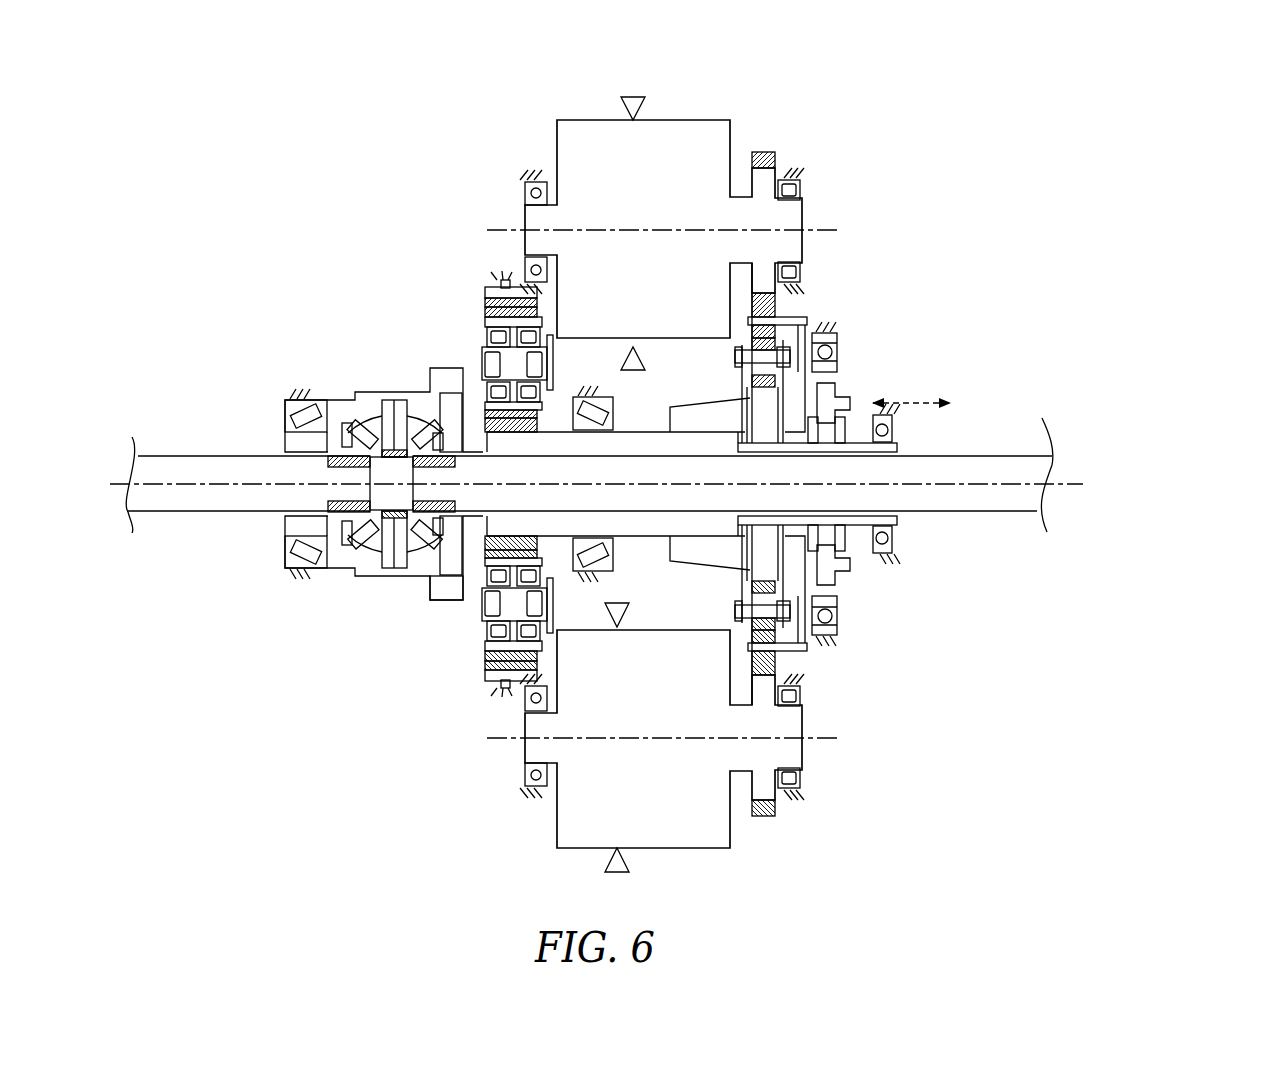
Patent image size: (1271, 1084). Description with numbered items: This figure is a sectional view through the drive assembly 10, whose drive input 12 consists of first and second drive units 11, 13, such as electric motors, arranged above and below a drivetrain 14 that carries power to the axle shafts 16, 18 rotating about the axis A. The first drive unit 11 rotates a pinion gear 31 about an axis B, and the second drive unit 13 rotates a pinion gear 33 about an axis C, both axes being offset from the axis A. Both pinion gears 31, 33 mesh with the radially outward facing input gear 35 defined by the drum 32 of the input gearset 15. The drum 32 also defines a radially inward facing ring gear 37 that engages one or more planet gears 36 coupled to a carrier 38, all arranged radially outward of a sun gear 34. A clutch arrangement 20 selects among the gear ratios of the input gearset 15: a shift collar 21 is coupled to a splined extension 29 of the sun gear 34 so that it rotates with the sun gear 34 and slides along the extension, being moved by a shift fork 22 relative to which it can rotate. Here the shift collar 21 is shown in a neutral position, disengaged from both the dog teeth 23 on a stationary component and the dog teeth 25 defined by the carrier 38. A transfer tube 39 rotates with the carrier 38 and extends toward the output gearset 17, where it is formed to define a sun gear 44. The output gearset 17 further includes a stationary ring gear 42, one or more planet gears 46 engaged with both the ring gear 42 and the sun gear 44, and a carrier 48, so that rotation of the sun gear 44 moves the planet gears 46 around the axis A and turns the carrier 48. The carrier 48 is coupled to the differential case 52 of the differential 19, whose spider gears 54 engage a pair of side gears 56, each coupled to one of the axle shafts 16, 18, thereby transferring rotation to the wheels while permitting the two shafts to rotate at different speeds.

The drive assembly 10 is at (676, 286).
The first drive unit 11 is at (553, 851).
The drive input 12 is at (705, 851).
The second drive unit 13 is at (742, 130).
The drivetrain 14 is at (966, 623).
The input gearset 15 is at (922, 308).
The axle shaft 16 is at (1035, 455).
The output gearset 17 is at (449, 293).
The axle shaft 18 is at (165, 456).
The differential 19 is at (380, 367).
The clutch arrangement 20 is at (948, 370).
The shift collar 21 is at (857, 405).
The shift fork 22 is at (856, 376).
The dog teeth 23 is at (897, 432).
The dog teeth 25 is at (834, 334).
The splined extension 29 is at (908, 448).
The pinion gear 31 is at (772, 820).
The drum 32 is at (832, 617).
The pinion gear 33 is at (782, 157).
The sun gear 34 is at (776, 558).
The input gear 35 is at (782, 661).
The planet gears 36 is at (796, 631).
The ring gear 37 is at (804, 645).
The carrier 38 is at (804, 591).
The transfer tube 39 is at (660, 418).
The stationary ring gear 42 is at (503, 694).
The sun gear 44 is at (452, 603).
The planet gears 46 is at (478, 658).
The carrier 48 is at (462, 598).
The differential case 52 is at (414, 381).
The spider gears 54 is at (358, 414).
The side gears 56 is at (435, 412).
The axis A is at (1083, 483).
The axis B is at (822, 742).
The axis C is at (813, 232).